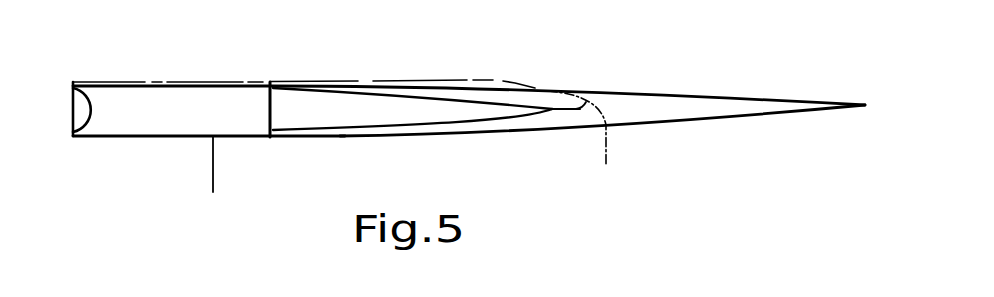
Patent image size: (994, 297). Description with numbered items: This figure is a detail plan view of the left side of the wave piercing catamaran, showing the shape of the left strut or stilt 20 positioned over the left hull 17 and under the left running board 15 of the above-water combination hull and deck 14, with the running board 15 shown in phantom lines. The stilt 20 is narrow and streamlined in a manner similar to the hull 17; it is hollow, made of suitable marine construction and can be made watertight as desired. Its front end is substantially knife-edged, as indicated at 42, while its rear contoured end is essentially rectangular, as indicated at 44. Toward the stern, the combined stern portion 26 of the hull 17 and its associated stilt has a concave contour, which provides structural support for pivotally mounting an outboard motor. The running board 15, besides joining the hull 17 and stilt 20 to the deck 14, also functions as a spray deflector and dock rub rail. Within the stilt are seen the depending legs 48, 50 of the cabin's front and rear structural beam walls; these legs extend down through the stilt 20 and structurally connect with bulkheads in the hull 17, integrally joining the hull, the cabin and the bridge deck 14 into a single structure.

The combination hull and deck 14 is at (607, 146).
The running board 15 is at (392, 80).
The hull 17 is at (671, 116).
The strut or stilt 20 is at (349, 95).
The combined stern portion 26 is at (88, 116).
The knife-edged front end 42 is at (580, 110).
The rectangular rear contoured end 44 is at (100, 113).
The depending leg 48 is at (270, 90).
The depending leg 50 is at (552, 108).